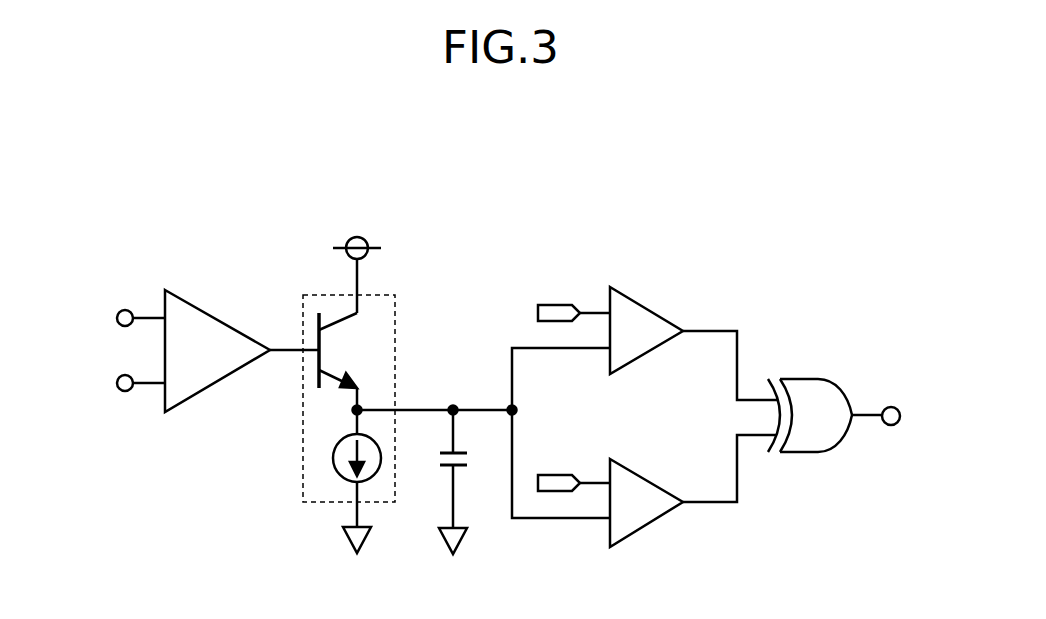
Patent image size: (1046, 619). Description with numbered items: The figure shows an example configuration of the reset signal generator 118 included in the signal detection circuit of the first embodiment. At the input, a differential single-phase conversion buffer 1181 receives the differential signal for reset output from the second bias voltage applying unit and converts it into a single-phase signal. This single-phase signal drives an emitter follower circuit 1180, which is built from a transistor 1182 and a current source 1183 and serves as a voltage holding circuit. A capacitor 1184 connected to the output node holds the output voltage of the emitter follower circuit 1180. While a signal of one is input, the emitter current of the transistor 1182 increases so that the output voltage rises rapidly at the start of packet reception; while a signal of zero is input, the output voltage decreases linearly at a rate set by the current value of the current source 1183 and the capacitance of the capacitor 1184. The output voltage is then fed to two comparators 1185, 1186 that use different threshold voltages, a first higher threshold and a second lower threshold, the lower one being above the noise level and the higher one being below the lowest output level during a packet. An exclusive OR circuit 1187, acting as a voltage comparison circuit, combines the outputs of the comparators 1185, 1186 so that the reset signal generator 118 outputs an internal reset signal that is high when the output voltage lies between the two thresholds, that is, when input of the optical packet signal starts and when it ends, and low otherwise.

The reset signal generator 118 is at (602, 186).
The emitter follower circuit 1180 is at (396, 316).
The differential single-phase conversion buffer 1181 is at (203, 311).
The transistor 1182 is at (319, 366).
The current source 1183 is at (333, 466).
The capacitor 1184 is at (440, 467).
The comparator 1185 is at (647, 303).
The comparator 1186 is at (650, 476).
The exclusive OR circuit 1187 is at (800, 378).